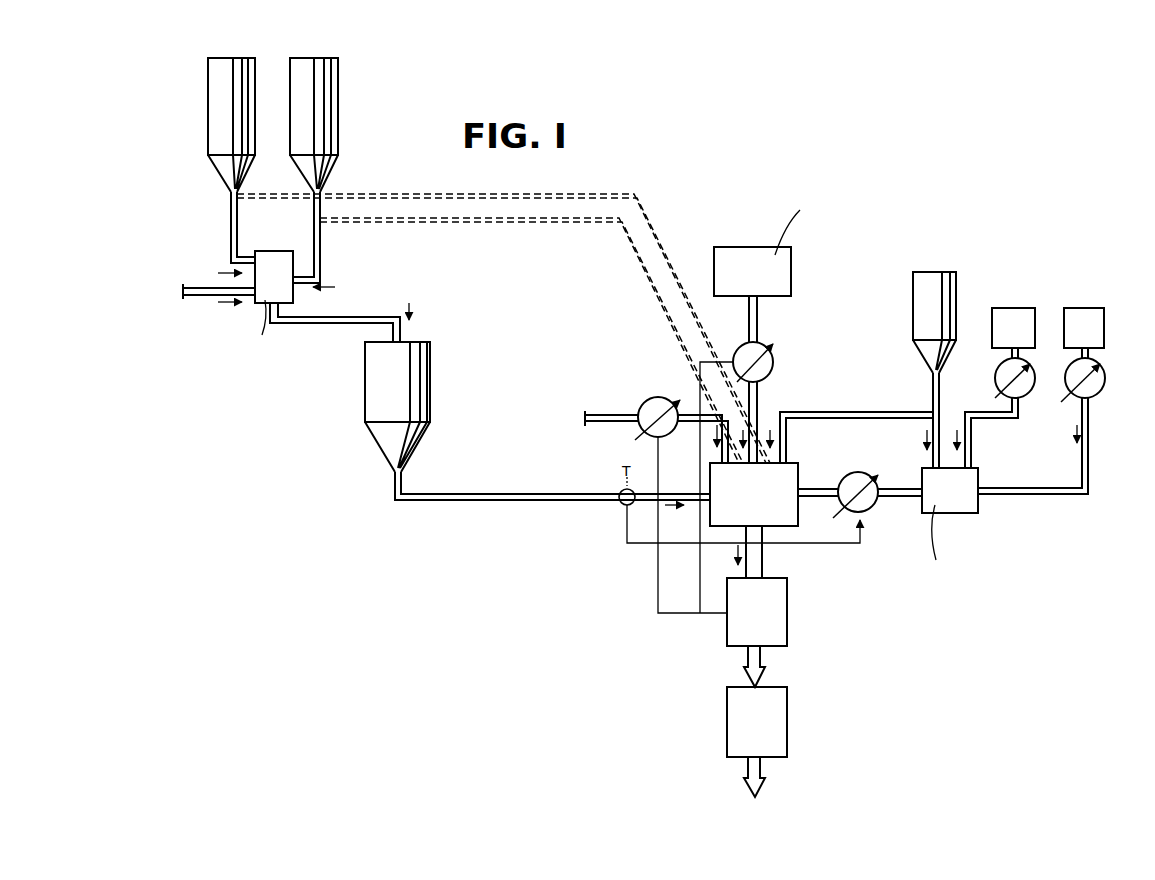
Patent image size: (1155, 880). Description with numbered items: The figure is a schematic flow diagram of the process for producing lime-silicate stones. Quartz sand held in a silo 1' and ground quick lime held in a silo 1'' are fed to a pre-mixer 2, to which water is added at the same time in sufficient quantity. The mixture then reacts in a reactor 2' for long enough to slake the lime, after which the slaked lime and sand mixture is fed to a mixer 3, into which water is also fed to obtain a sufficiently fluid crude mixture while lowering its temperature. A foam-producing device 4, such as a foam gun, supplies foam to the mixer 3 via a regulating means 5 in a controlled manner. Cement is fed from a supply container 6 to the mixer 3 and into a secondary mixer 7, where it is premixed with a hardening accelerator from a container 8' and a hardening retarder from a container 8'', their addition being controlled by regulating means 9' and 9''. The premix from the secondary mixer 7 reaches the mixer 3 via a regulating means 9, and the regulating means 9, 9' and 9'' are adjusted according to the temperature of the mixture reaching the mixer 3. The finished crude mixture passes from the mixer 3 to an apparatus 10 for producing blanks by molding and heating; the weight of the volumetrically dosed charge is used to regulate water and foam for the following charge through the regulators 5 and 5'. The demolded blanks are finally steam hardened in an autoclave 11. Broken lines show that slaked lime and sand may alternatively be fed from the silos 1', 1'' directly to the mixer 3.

The silo 1' is at (215, 160).
The silo 1'' is at (337, 170).
The pre-mixer 2 is at (269, 285).
The reactor 2' is at (518, 421).
The mixer 3 is at (792, 470).
The foam-producing device 4 is at (753, 250).
The regulating means 5 is at (769, 402).
The regulator 5' is at (631, 418).
The supply container 6 is at (930, 280).
The secondary mixer 7 is at (960, 505).
The container 8' is at (1029, 328).
The container 8'' is at (1103, 328).
The regulating means 9 is at (860, 506).
The regulating means 9' is at (995, 408).
The regulating means 9'' is at (1058, 421).
The apparatus 10 is at (786, 607).
The autoclave 11 is at (786, 711).